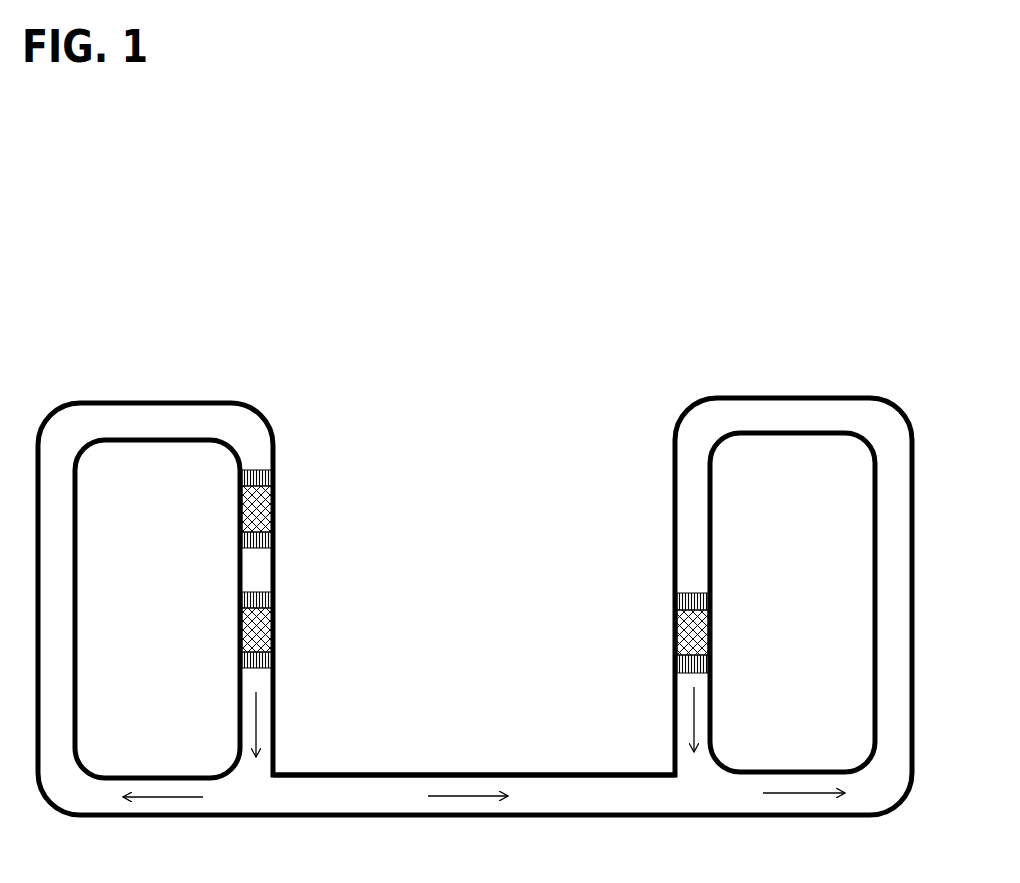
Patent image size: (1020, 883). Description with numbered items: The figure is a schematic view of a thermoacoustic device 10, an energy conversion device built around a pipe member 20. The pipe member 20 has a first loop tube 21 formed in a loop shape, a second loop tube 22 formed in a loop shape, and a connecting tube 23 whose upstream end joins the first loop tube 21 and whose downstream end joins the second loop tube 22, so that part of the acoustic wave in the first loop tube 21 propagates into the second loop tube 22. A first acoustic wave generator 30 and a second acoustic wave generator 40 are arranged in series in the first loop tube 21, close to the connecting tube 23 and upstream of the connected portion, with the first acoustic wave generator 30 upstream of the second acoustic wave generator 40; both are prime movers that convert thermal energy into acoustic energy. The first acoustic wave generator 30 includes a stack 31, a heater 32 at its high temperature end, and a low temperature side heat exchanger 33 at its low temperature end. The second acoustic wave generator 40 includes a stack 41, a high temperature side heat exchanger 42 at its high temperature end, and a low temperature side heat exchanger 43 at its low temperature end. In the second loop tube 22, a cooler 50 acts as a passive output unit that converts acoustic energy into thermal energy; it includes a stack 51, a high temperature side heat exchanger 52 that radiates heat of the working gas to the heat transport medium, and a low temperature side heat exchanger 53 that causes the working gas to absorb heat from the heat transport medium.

The thermoacoustic device 10 is at (838, 370).
The pipe member 20 is at (768, 392).
The first loop tube 21 is at (38, 462).
The second loop tube 22 is at (913, 458).
The connecting tube 23 is at (465, 818).
The first acoustic wave generator 30 is at (250, 507).
The stack 31 is at (277, 517).
The heater 32 is at (277, 544).
The low temperature side heat exchanger 33 is at (277, 481).
The second acoustic wave generator 40 is at (250, 632).
The stack 41 is at (277, 637).
The high temperature side heat exchanger 42 is at (277, 665).
The low temperature side heat exchanger 43 is at (277, 600).
The cooler 50 is at (700, 630).
The stack 51 is at (674, 638).
The high temperature side heat exchanger 52 is at (674, 600).
The low temperature side heat exchanger 53 is at (674, 663).